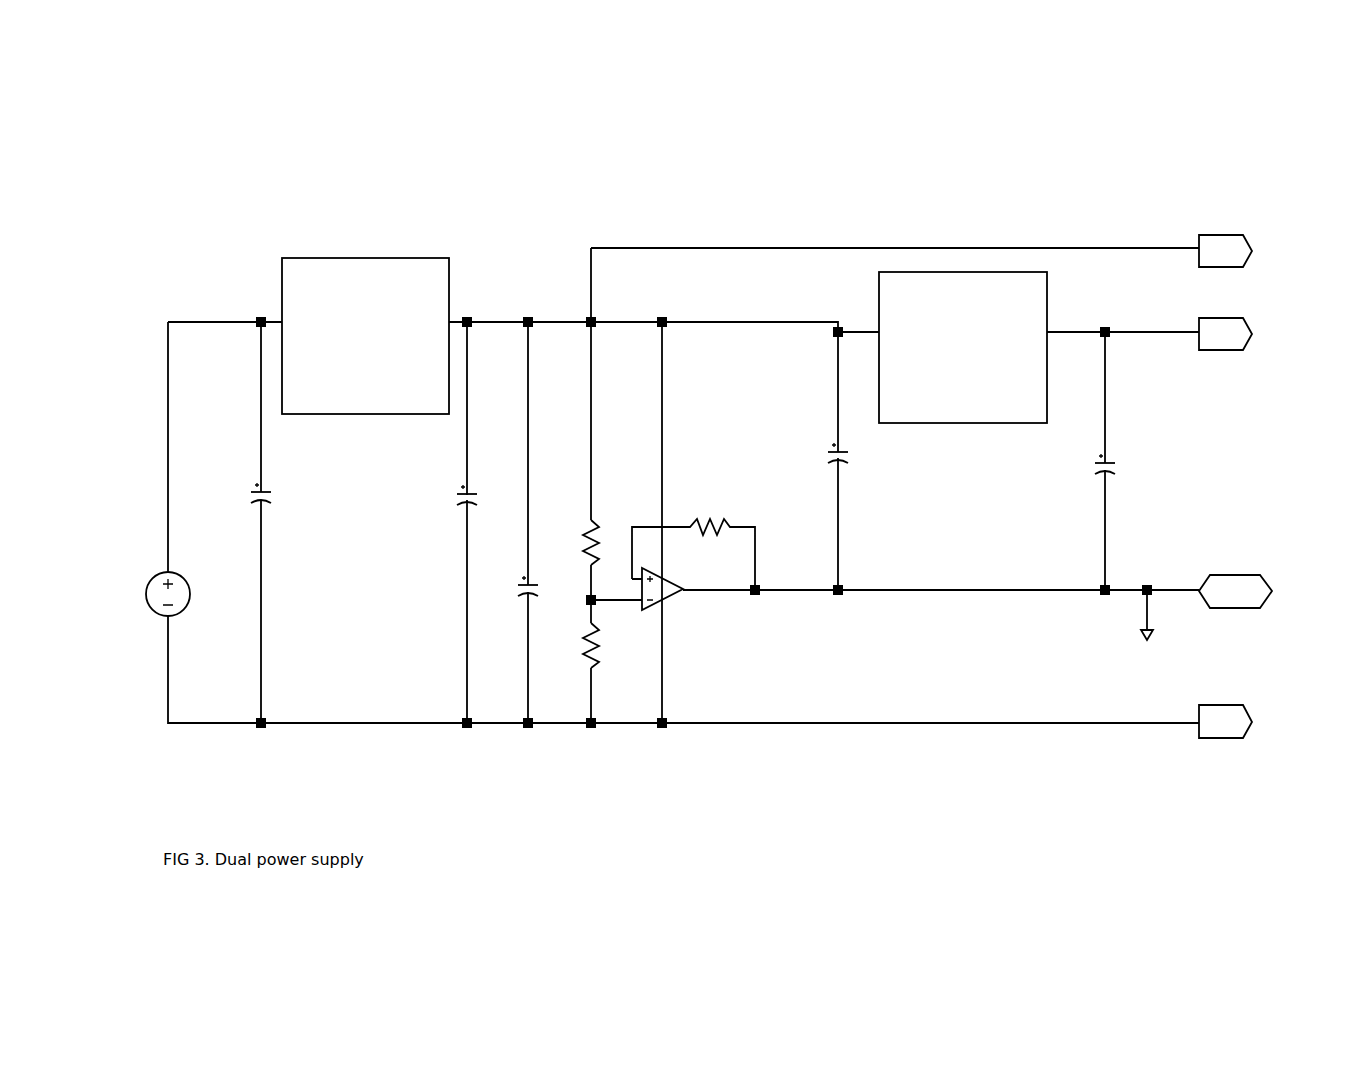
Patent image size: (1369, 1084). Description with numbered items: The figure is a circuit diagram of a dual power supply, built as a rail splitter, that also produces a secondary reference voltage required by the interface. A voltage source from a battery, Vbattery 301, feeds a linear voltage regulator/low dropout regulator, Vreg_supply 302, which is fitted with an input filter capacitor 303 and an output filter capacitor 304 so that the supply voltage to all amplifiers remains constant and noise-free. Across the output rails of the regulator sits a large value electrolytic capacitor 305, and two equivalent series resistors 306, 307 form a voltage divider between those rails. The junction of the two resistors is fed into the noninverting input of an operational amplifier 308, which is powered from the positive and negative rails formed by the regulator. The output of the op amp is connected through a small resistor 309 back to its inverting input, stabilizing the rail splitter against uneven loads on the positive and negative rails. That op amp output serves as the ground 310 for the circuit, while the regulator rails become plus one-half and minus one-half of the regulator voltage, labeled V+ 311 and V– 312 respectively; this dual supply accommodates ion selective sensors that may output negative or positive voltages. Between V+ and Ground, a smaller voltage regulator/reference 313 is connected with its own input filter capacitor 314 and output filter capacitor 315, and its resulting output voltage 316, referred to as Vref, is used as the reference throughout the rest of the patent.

The Vbattery 301 is at (147, 577).
The Vreg_supply 302 is at (383, 250).
The input filter capacitor 303 is at (272, 488).
The output filter capacitor 304 is at (450, 493).
The large value electrolytic capacitor 305 is at (520, 578).
The series resistor 306 is at (577, 540).
The series resistor 307 is at (578, 648).
The operational amplifier 308 is at (683, 603).
The small resistor 309 is at (727, 520).
The ground 310 is at (1270, 583).
The V+ 311 is at (1250, 230).
The V– 312 is at (1252, 705).
The voltage regulator/reference 313 is at (1002, 265).
The input filter capacitor 314 is at (857, 465).
The output filter capacitor 315 is at (1090, 468).
The Vref 316 is at (1250, 318).